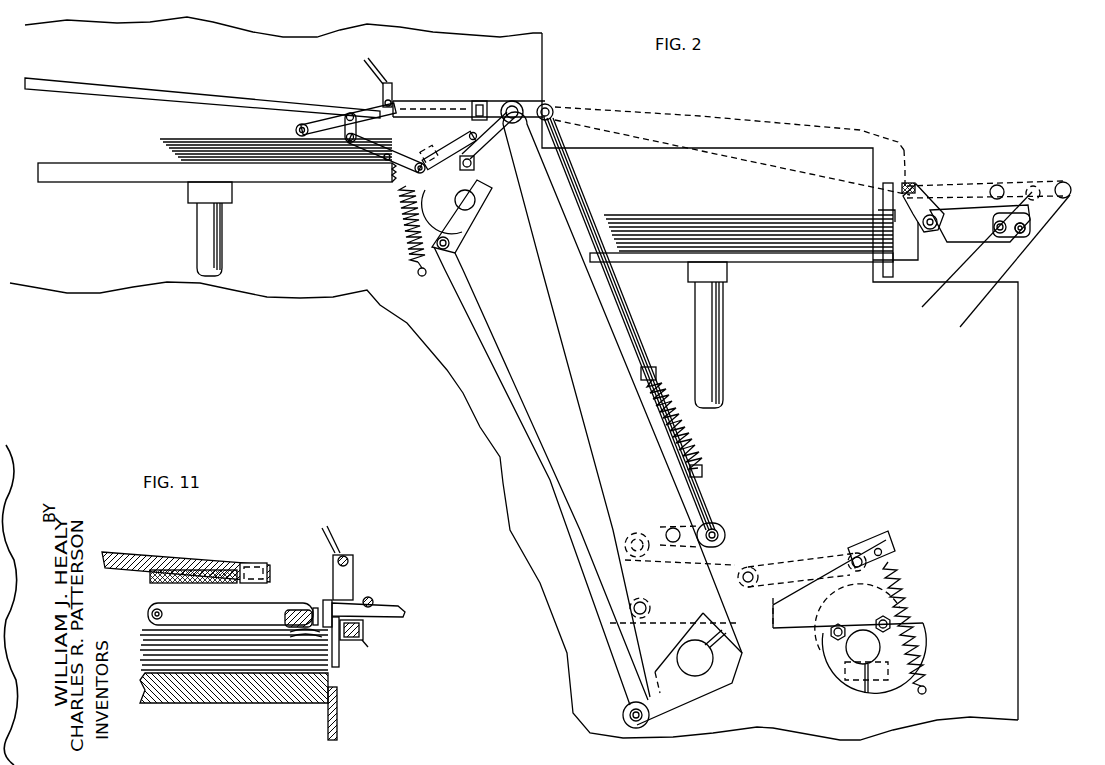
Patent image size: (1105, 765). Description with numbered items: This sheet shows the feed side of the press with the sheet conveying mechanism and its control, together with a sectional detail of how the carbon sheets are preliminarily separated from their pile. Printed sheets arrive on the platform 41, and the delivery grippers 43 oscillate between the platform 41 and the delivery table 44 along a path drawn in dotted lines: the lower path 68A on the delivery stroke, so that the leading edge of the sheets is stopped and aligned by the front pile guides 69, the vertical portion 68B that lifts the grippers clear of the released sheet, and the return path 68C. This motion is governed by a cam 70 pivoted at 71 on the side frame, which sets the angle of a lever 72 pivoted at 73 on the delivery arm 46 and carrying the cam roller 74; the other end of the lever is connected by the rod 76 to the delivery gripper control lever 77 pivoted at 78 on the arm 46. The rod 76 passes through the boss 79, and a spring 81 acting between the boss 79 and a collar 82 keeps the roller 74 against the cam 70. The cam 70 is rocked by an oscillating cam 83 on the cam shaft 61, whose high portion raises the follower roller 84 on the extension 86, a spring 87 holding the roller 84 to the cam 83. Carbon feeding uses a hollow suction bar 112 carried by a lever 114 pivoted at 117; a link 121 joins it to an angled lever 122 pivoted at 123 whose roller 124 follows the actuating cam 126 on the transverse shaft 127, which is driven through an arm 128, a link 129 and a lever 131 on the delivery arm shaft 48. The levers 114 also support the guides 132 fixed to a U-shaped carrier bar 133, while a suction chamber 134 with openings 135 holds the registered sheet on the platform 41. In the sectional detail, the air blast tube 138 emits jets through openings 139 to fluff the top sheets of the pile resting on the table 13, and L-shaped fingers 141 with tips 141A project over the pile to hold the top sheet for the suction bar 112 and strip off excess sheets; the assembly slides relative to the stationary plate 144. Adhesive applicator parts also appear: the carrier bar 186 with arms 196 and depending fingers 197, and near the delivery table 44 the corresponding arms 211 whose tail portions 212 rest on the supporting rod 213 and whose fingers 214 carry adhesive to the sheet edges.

In FIG. 2, the table 13 is at (132, 170).
In FIG. 11, the table 13 is at (250, 700).
In FIG. 2, the platform 41 is at (232, 93).
In FIG. 11, the platform 41 is at (145, 556).
In FIG. 2, the delivery grippers 43 is at (445, 100).
In FIG. 2, the delivery table 44 is at (808, 262).
In FIG. 2, the delivery arm 46 is at (578, 368).
In FIG. 2, the delivery arm shaft 48 is at (702, 665).
In FIG. 2, the cam shaft 61 is at (860, 650).
In FIG. 2, the lower path 68A is at (757, 160).
In FIG. 2, the vertical path portion 68B is at (912, 170).
In FIG. 2, the return path 68C is at (770, 124).
In FIG. 2, the front pile guides 69 is at (900, 188).
In FIG. 2, the cam 70 is at (718, 587).
In FIG. 2, the pivot 71 is at (633, 601).
In FIG. 2, the lever 72 is at (709, 524).
In FIG. 2, the pivot 73 is at (672, 528).
In FIG. 2, the cam roller 74 is at (625, 537).
In FIG. 2, the rod 76 is at (622, 308).
In FIG. 2, the delivery gripper control lever 77 is at (543, 105).
In FIG. 2, the pivot 78 is at (512, 101).
In FIG. 2, the boss 79 is at (700, 472).
In FIG. 2, the spring 81 is at (680, 443).
In FIG. 2, the collar 82 is at (652, 368).
In FIG. 2, the oscillating cam 83 is at (910, 607).
In FIG. 2, the follower roller 84 is at (853, 556).
In FIG. 2, the extension 86 is at (888, 546).
In FIG. 2, the spring 87 is at (893, 575).
In FIG. 11, the suction bar 112 is at (287, 613).
In FIG. 2, the lever 114 is at (330, 120).
In FIG. 11, the lever 114 is at (192, 612).
In FIG. 2, the pivot 117 is at (296, 129).
In FIG. 2, the link 121 is at (357, 130).
In FIG. 2, the angled lever 122 is at (368, 151).
In FIG. 2, the pivot 123 is at (471, 135).
In FIG. 2, the roller 124 is at (412, 176).
In FIG. 2, the actuating cam 126 is at (432, 204).
In FIG. 2, the transverse shaft 127 is at (469, 209).
In FIG. 2, the arm 128 is at (452, 250).
In FIG. 2, the link 129 is at (524, 444).
In FIG. 2, the lever 131 is at (652, 705).
In FIG. 2, the guides 132 is at (367, 60).
In FIG. 11, the guides 132 is at (338, 538).
In FIG. 2, the U-shaped carrier bar 133 is at (389, 84).
In FIG. 11, the U-shaped carrier bar 133 is at (350, 572).
In FIG. 11, the suction chamber 134 is at (240, 568).
In FIG. 11, the openings 135 is at (255, 561).
In FIG. 11, the air blast tube 138 is at (366, 631).
In FIG. 11, the openings 139 is at (366, 641).
In FIG. 11, the L-shaped fingers 141 is at (345, 652).
In FIG. 11, the rearwardly projecting tips 141A is at (316, 607).
In FIG. 11, the stationary plate 144 is at (340, 719).
In FIG. 11, the carrier bar 186 is at (371, 598).
In FIG. 11, the arms 196 is at (396, 609).
In FIG. 11, the depending fingers 197 is at (322, 603).
In FIG. 2, the arms 211 is at (968, 210).
In FIG. 2, the tail portions 212 is at (1022, 213).
In FIG. 2, the supporting rod 213 is at (1027, 229).
In FIG. 2, the fingers 214 is at (878, 211).